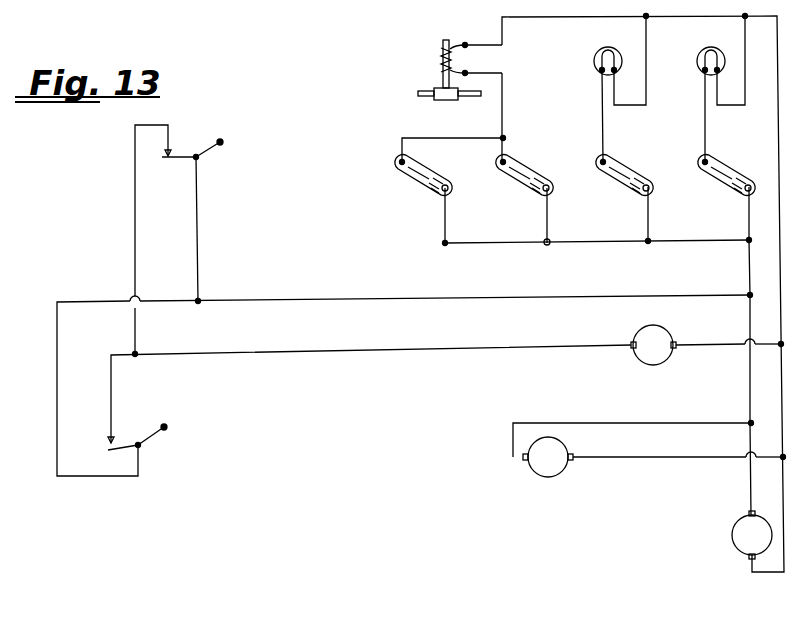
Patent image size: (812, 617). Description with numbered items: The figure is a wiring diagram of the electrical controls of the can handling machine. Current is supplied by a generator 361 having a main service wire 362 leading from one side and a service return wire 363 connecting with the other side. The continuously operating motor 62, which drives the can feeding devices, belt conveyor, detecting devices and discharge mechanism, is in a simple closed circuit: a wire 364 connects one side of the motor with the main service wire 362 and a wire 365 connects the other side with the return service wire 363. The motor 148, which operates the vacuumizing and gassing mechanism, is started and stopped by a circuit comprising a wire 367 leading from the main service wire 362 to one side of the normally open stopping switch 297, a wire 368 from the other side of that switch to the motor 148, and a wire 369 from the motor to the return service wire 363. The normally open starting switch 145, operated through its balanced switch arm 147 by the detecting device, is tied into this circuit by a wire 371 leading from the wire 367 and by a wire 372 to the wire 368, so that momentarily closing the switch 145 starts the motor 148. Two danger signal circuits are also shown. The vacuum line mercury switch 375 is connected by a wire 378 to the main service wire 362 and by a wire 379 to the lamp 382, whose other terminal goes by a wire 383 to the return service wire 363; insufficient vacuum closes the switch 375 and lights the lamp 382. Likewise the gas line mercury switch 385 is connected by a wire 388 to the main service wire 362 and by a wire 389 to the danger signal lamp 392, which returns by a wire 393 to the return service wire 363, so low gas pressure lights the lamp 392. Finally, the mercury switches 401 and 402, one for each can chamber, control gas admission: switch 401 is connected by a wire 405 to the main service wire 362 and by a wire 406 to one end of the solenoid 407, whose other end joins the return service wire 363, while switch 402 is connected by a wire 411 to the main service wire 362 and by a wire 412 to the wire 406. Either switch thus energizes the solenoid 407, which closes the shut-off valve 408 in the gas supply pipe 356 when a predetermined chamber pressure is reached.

The service return wire 363 is at (598, 19).
The solenoid 407 is at (443, 50).
The gas supply pipe 356 is at (430, 91).
The shut-off valve 408 is at (448, 100).
The wire 406 is at (503, 119).
The wire 412 is at (472, 136).
The danger signal lamp 392 is at (598, 70).
The wire 393 is at (647, 35).
The wire 389 is at (604, 130).
The lamp 382 is at (702, 71).
The wire 383 is at (746, 59).
The wire 379 is at (706, 130).
The mercury switch 402 is at (416, 176).
The mercury switch 401 is at (519, 176).
The mercury switch 385 is at (620, 176).
The mercury switch 375 is at (722, 176).
The wire 411 is at (444, 228).
The wire 405 is at (546, 228).
The wire 388 is at (647, 228).
The wire 378 is at (748, 228).
The main service wire 362 is at (688, 242).
The wire 372 is at (134, 234).
The electric switch 145 is at (175, 168).
The balanced switch arm 147 is at (217, 142).
The wire 371 is at (200, 234).
The wire 367 is at (377, 298).
The wire 368 is at (377, 352).
The stopping switch 297 is at (128, 446).
The electric motor 148 is at (637, 360).
The wire 369 is at (713, 346).
The wire 364 is at (671, 426).
The electric motor 62 is at (544, 478).
The wire 365 is at (639, 459).
The generator 361 is at (736, 549).